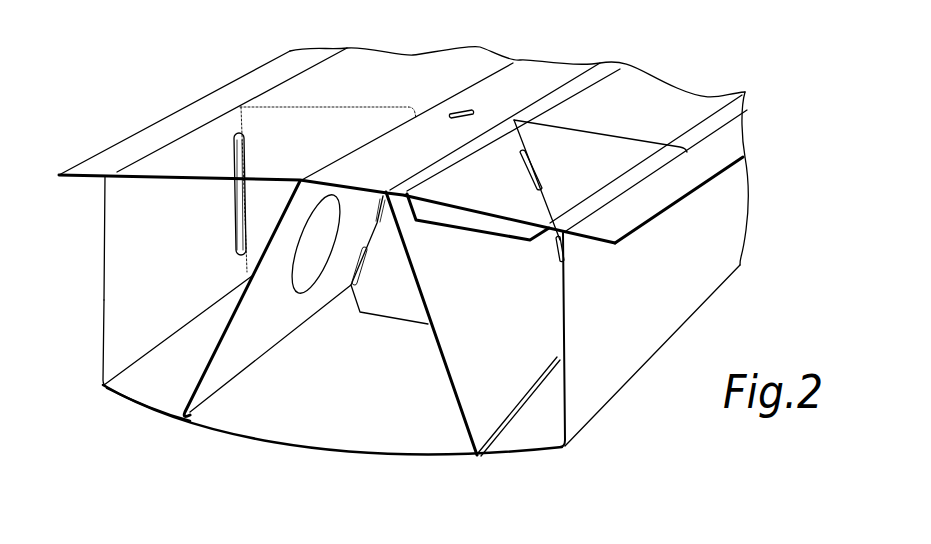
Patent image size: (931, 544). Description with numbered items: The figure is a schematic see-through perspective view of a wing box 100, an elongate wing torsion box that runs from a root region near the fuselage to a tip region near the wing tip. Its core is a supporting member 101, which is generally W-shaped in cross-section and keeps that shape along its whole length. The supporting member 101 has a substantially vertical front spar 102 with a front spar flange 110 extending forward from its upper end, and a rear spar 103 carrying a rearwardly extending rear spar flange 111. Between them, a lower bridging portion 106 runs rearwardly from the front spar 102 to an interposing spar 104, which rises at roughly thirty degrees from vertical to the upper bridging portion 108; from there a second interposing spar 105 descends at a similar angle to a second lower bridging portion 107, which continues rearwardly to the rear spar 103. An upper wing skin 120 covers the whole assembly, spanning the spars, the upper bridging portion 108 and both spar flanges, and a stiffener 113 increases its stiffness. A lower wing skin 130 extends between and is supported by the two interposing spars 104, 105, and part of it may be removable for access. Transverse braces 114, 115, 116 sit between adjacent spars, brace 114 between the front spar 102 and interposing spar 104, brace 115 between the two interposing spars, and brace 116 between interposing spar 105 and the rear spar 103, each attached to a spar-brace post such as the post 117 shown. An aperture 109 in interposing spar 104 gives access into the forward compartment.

The wing box 100 is at (430, 252).
The supporting member 101 is at (137, 268).
The front spar 102 is at (137, 245).
The rear spar 103 is at (713, 237).
The interposing spar 104 is at (233, 367).
The interposing spar 105 is at (468, 375).
The lower bridging portion 106 is at (170, 402).
The lower bridging portion 107 is at (538, 427).
The upper bridging portion 108 is at (417, 143).
The aperture 109 is at (308, 262).
The front spar flange 110 is at (222, 95).
The rear spar flange 111 is at (720, 147).
The stiffener 113 is at (465, 220).
The brace 114 is at (260, 207).
The brace 115 is at (400, 298).
The brace 116 is at (573, 143).
The spar-brace post 117 is at (238, 187).
The upper wing skin 120 is at (620, 142).
The lower wing skin 130 is at (310, 460).